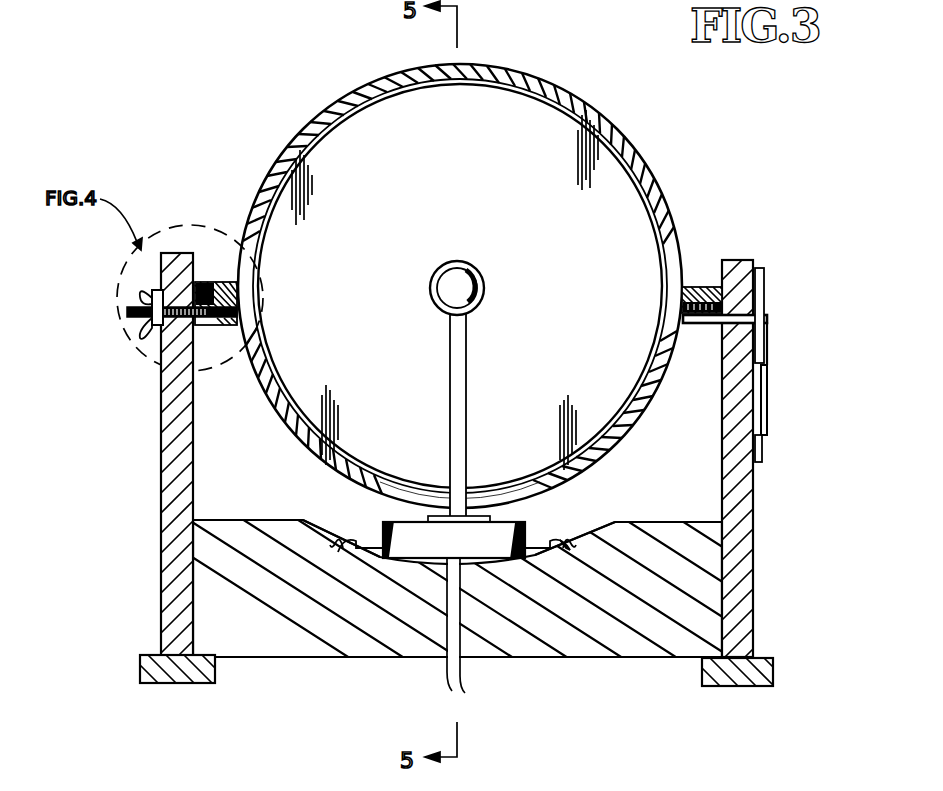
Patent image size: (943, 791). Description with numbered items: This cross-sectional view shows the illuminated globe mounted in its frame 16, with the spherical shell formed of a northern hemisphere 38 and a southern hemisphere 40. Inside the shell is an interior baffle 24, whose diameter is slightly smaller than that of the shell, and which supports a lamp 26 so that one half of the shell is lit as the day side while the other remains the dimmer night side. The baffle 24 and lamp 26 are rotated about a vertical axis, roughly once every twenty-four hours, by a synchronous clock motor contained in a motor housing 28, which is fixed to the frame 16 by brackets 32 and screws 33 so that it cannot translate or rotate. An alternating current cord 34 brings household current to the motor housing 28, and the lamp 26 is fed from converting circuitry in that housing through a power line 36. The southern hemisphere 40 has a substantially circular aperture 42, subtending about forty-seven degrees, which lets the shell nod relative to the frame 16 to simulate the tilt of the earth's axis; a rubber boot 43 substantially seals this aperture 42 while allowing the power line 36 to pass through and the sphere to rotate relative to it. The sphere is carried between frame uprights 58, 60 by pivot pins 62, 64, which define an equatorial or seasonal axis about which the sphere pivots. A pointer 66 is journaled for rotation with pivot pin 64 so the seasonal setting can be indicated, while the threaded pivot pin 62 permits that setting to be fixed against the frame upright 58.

The frame 16 is at (632, 645).
The interior baffle 24 is at (483, 209).
The lamp 26 is at (470, 272).
The motor housing 28 is at (538, 530).
The brackets 32 is at (362, 538).
The screws 33 is at (340, 540).
The alternating current cord 34 is at (445, 682).
The power line 36 is at (470, 415).
The northern hemisphere 38 is at (572, 88).
The southern hemisphere 40 is at (660, 372).
The aperture 42 is at (390, 487).
The rubber boot 43 is at (505, 512).
The frame upright 58 is at (163, 470).
The frame upright 60 is at (754, 508).
The pivot pin 62 is at (158, 350).
The pivot pin 64 is at (769, 330).
The pointer 66 is at (770, 395).